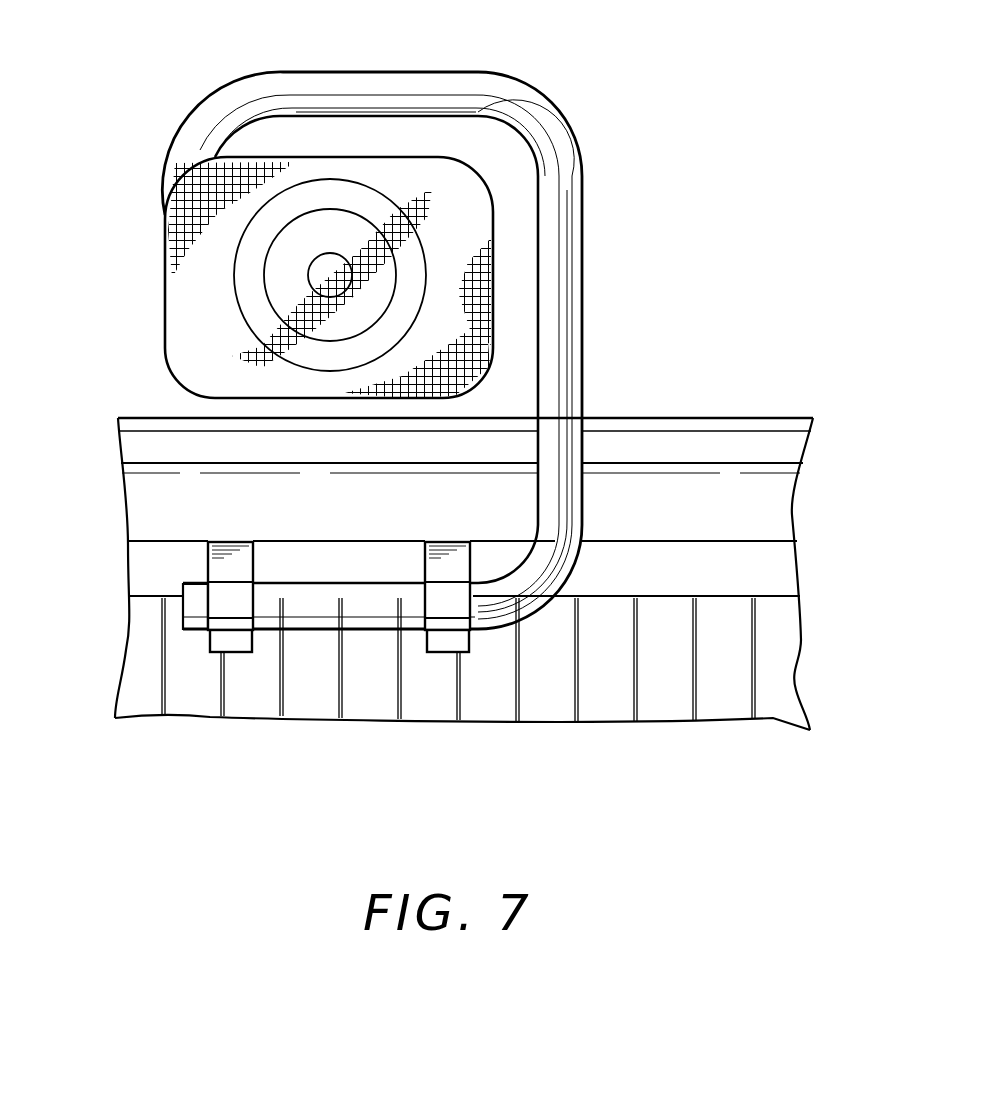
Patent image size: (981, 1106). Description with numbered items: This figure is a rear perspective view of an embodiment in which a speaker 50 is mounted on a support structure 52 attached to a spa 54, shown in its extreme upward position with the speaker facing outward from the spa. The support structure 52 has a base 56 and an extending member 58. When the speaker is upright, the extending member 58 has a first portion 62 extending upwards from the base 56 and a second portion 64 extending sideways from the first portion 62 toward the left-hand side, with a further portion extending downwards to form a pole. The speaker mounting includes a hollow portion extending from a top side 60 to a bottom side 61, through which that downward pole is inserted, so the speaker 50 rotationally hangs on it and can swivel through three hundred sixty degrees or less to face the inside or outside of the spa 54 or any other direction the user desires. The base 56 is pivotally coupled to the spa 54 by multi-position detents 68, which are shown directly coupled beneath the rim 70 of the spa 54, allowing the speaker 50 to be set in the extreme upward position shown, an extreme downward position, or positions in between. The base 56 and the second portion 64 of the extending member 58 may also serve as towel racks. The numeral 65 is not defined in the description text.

The speaker 50 is at (236, 240).
The support structure 52 is at (506, 385).
The spa 54 is at (735, 638).
The base 56 is at (343, 630).
The extending member 58 is at (565, 517).
The top side 60 is at (293, 241).
The bottom side 61 is at (198, 361).
The first portion 62 is at (548, 122).
The second portion 64 is at (396, 102).
The upper left bend of tube 65 is at (267, 72).
The multi-position detents 68 is at (228, 652).
The rim 70 is at (135, 447).